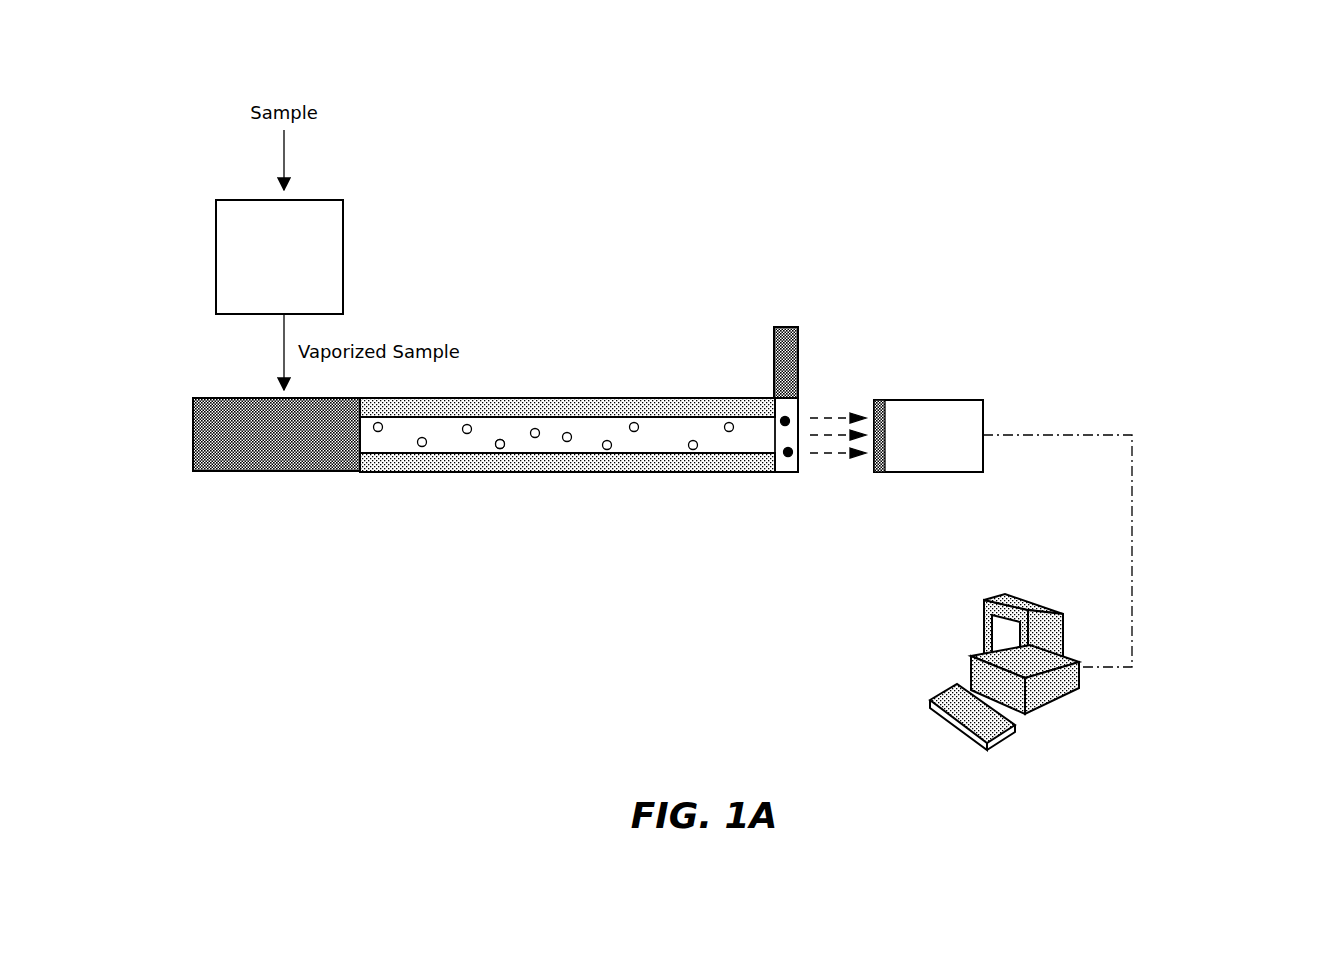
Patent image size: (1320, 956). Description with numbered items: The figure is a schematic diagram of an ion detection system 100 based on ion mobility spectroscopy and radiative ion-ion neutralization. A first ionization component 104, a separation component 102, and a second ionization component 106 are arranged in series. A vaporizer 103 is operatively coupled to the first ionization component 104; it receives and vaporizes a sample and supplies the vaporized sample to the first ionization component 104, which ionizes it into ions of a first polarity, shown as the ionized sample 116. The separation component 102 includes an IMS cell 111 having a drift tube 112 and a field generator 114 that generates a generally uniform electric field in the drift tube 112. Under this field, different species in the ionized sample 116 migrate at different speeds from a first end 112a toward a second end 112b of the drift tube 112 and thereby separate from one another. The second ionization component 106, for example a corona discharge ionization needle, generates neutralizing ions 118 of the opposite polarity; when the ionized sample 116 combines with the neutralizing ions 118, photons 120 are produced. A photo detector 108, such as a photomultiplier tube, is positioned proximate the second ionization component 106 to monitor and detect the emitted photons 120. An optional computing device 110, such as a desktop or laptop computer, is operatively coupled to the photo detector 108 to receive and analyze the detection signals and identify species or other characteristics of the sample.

The ion detection system 100 is at (1180, 106).
The separation component 102 is at (503, 398).
The vaporizer 103 is at (343, 248).
The first ionization component 104 is at (193, 408).
The second ionization component 106 is at (798, 395).
The photo detector 108 is at (983, 410).
The computing device 110 is at (1028, 598).
The IMS cell 111 is at (587, 549).
The drift tube 112 is at (622, 443).
The first end 112a is at (377, 485).
The second end 112b is at (764, 395).
The field generator 114 is at (604, 413).
The ionized sample 116 is at (500, 447).
The neutralizing ions 118 is at (789, 456).
The photons 120 is at (838, 480).